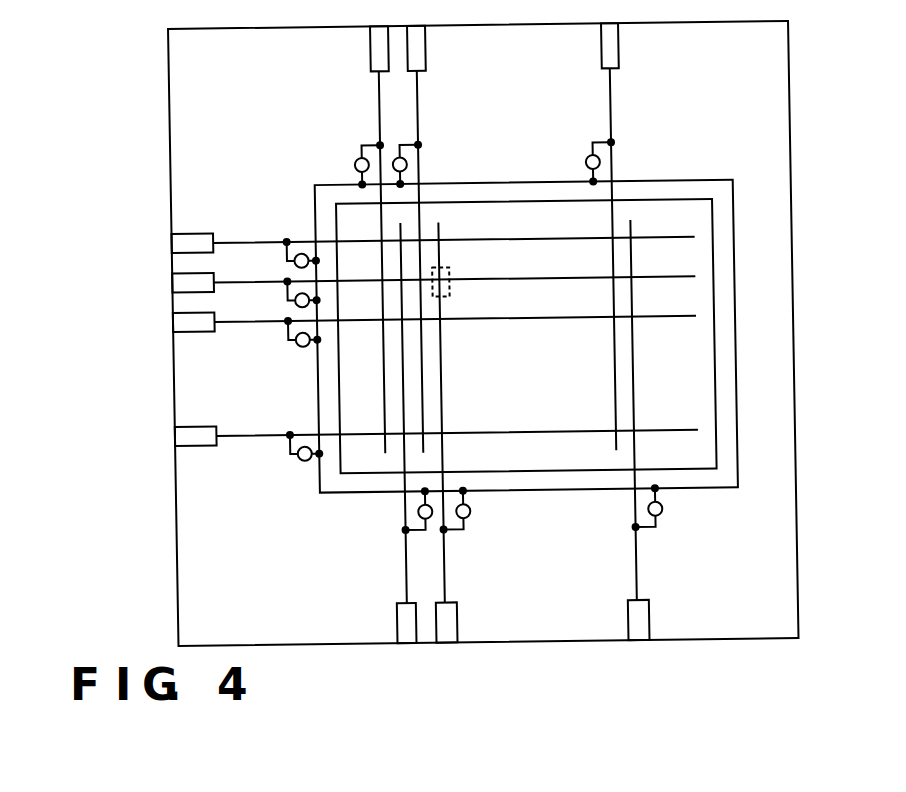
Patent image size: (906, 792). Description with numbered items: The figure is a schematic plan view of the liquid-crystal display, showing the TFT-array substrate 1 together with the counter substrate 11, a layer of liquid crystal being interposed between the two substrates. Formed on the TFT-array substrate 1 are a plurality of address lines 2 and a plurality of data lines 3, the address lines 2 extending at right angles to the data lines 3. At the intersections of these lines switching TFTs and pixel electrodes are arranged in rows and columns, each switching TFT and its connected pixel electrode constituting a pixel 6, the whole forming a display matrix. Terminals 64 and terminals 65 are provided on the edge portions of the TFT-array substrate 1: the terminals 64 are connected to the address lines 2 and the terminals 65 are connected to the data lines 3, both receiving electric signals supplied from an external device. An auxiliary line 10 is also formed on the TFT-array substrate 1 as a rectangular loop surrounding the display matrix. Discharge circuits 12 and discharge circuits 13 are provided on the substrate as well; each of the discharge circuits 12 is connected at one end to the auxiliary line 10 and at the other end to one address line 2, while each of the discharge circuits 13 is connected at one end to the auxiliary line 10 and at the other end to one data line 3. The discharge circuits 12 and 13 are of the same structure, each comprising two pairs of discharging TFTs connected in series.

The TFT-array substrate 1 is at (169, 125).
The address lines 2 is at (350, 283).
The data lines 3 is at (435, 409).
The pixel 6 is at (446, 270).
The auxiliary line 10 is at (329, 495).
The counter substrate 11 is at (486, 206).
The discharge circuits 12 is at (292, 347).
The discharge circuits 13 is at (462, 518).
The terminals 64 is at (194, 233).
The terminals 65 is at (425, 61).